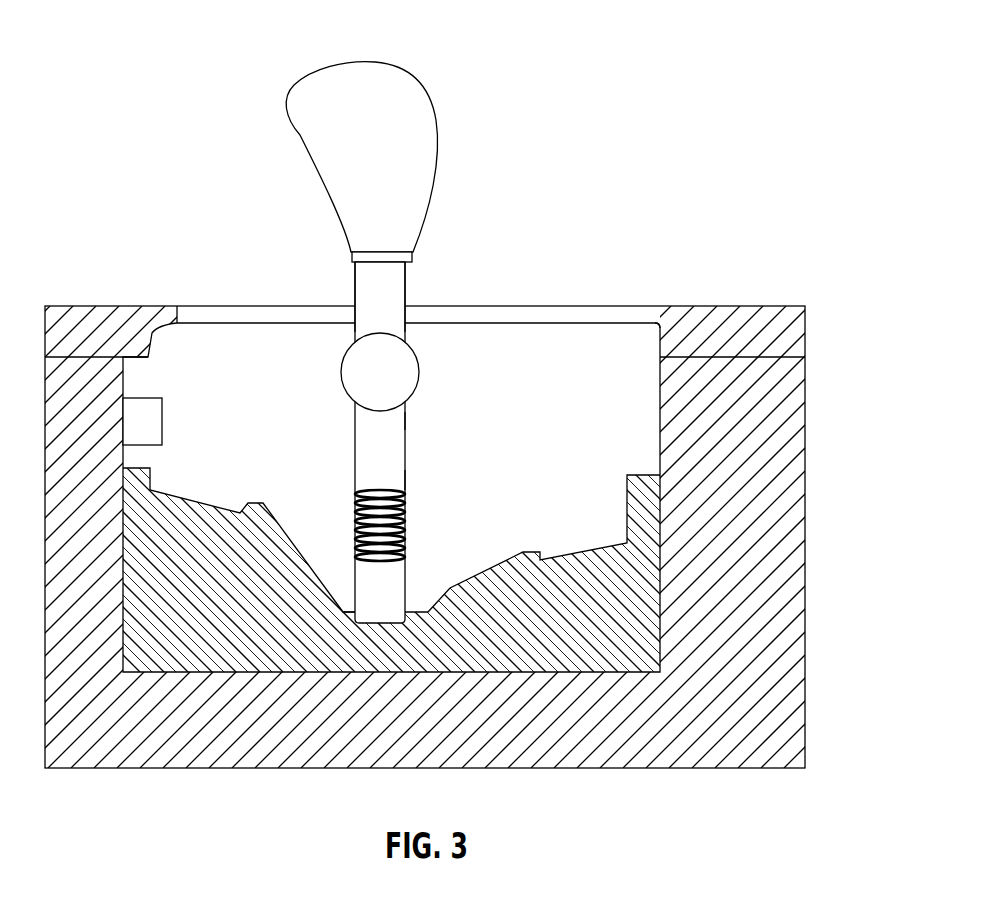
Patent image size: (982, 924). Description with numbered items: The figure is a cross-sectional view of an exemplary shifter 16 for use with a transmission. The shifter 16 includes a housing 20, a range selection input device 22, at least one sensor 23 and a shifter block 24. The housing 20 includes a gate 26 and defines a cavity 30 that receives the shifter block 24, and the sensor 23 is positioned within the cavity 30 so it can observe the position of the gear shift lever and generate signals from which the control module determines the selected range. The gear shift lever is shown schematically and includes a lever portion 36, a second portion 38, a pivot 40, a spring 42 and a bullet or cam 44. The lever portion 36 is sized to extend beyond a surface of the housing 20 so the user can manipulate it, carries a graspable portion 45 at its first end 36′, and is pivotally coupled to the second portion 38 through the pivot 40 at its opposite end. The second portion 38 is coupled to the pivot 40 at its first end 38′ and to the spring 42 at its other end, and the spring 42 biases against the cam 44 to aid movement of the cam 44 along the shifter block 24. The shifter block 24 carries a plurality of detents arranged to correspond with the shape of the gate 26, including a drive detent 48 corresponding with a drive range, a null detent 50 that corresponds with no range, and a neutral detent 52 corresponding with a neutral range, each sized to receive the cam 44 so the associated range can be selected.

The shifter 16 is at (361, 314).
The housing 20 is at (491, 514).
The range selection input device 22 is at (413, 216).
The sensor 23 is at (143, 398).
The shifter block 24 is at (569, 456).
The gate 26 is at (595, 328).
The cavity 30 is at (640, 352).
The lever portion 36 is at (392, 297).
The first end 36′ is at (355, 283).
The second portion 38 is at (380, 511).
The first end 38′ is at (406, 403).
The pivot 40 is at (353, 379).
The spring 42 is at (406, 523).
The cam 44 is at (406, 592).
The graspable portion 45 is at (414, 107).
The drive detent 48 is at (578, 552).
The null detent 50 is at (343, 577).
The neutral detent 52 is at (192, 497).